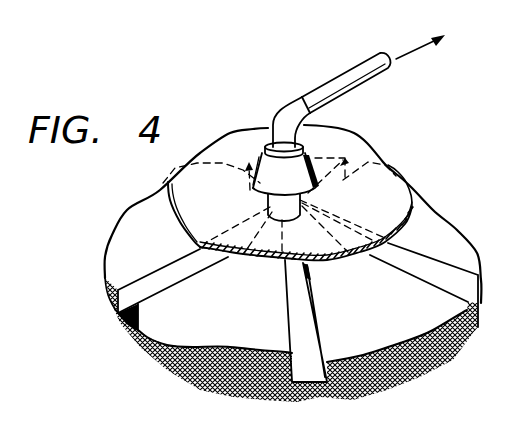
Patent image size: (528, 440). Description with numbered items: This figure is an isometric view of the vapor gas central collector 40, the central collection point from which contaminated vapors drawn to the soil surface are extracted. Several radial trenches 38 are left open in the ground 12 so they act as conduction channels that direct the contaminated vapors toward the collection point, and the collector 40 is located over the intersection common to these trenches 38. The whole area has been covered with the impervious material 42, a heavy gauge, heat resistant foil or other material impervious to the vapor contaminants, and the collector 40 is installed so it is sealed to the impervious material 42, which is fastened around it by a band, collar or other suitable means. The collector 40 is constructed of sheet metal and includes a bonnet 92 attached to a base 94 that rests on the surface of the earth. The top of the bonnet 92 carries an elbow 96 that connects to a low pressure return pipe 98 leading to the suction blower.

The ground 12 is at (400, 377).
The trenches 38 is at (178, 268).
The vapor gas central collector 40 is at (327, 123).
The impervious material 42 is at (398, 186).
The bonnet 92 is at (308, 192).
The base 94 is at (268, 205).
The elbow 96 is at (280, 110).
The low pressure return pipe 98 is at (343, 75).